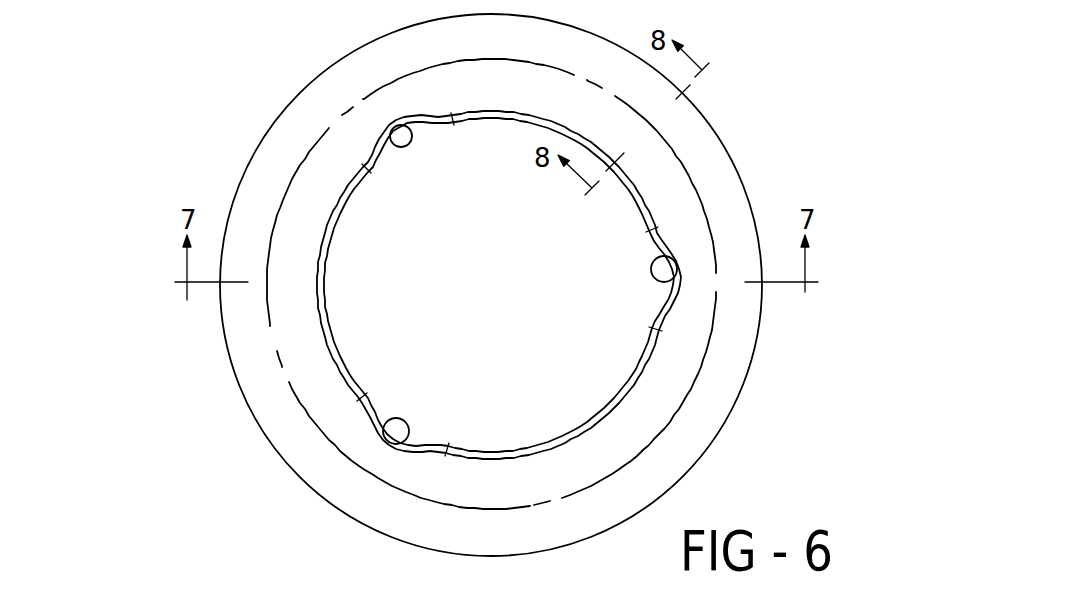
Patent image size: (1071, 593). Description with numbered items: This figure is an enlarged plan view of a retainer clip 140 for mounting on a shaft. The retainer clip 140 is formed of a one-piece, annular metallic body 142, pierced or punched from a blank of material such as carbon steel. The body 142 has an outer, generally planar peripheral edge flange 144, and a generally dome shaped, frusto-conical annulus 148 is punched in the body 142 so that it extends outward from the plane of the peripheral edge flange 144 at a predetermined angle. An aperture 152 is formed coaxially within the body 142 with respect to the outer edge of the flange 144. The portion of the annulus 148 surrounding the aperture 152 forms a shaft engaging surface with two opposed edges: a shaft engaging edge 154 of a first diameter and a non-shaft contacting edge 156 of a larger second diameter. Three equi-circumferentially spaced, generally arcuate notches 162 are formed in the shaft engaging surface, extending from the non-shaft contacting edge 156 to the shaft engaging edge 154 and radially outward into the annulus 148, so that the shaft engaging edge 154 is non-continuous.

The retainer clip 140 is at (748, 84).
The body 142 is at (722, 197).
The peripheral edge flange 144 is at (703, 427).
The frusto-conical annulus 148 is at (675, 373).
The aperture 152 is at (506, 448).
The shaft engaging edge 154 is at (568, 432).
The non-shaft contacting edge 156 is at (597, 421).
The notches 162 is at (667, 253).